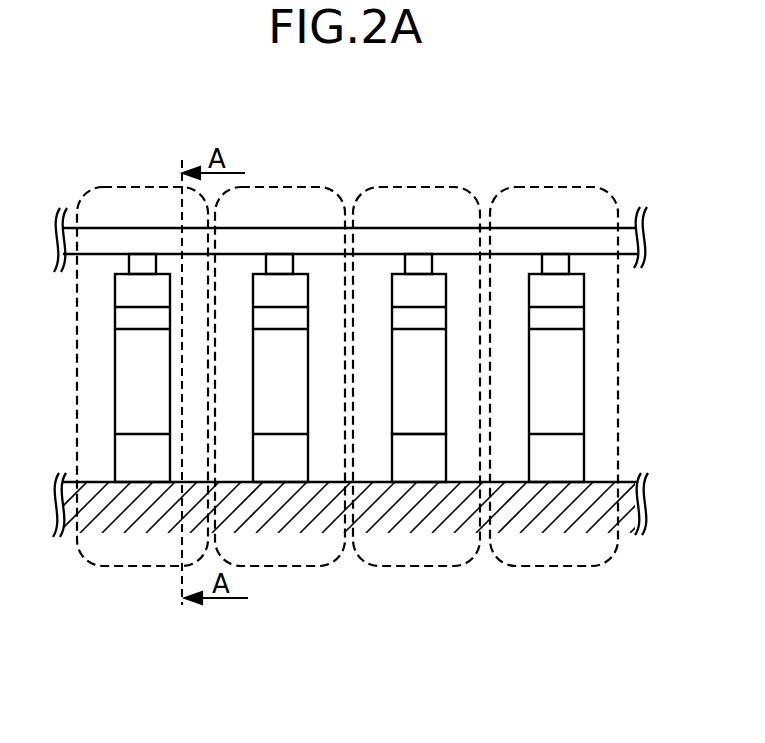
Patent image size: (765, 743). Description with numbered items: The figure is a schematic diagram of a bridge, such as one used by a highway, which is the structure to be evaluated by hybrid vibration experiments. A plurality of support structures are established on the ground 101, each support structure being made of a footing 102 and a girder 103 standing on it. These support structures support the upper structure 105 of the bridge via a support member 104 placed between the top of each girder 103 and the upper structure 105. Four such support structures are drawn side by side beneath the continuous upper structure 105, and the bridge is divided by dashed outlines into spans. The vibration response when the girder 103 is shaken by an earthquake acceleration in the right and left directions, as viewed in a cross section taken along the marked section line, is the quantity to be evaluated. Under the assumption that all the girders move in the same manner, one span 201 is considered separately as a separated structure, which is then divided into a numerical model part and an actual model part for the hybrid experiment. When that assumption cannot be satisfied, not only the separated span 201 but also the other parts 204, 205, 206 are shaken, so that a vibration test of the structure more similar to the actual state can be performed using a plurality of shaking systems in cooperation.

The ground 101 is at (300, 497).
The footing 102 is at (405, 477).
The girder 103 is at (428, 420).
The support member 104 is at (418, 261).
The upper structure 105 is at (557, 240).
The span 201 is at (143, 187).
The other part 204 is at (281, 187).
The other part 205 is at (420, 187).
The other part 206 is at (556, 187).